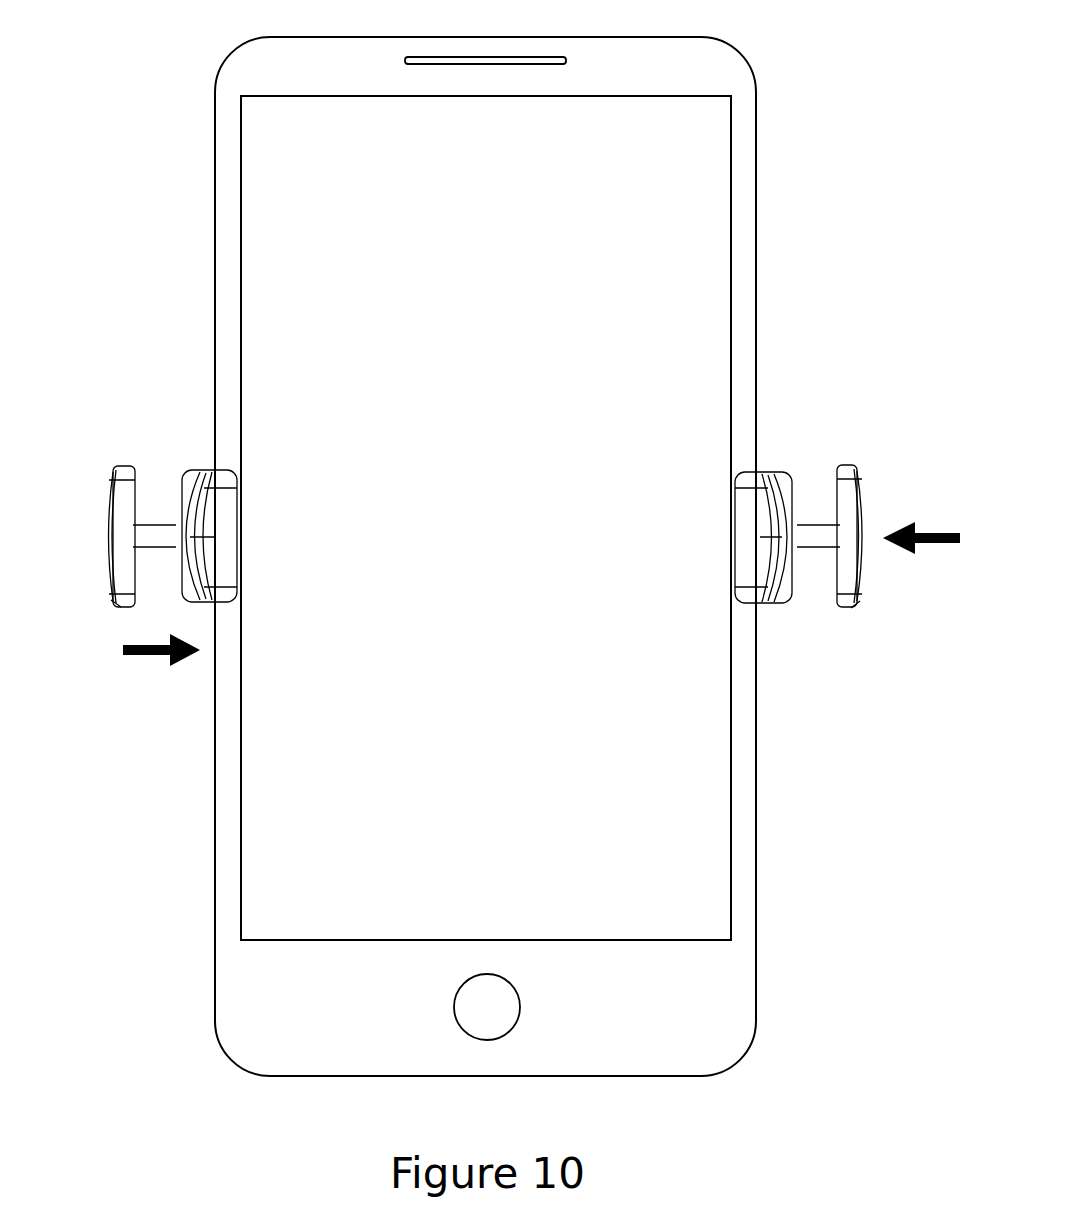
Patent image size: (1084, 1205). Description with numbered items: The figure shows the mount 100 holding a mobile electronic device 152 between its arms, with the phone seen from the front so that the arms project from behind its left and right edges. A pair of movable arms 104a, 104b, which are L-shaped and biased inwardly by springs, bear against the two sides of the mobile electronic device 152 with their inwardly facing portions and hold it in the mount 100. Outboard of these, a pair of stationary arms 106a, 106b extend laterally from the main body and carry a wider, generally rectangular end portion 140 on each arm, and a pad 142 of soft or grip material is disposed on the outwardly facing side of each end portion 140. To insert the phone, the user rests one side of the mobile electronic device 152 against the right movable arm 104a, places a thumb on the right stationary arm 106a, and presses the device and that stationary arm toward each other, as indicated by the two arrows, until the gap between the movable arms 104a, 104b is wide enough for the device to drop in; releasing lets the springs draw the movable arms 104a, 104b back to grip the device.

The mount 100 is at (830, 163).
The mobile electronic device 152 is at (272, 259).
The right movable arm 104a is at (750, 541).
The left movable arm 104b is at (228, 542).
The right stationary arm 106a is at (822, 522).
The left stationary arm 106b is at (150, 530).
The end portion 140 is at (128, 468).
The pad 142 is at (105, 582).